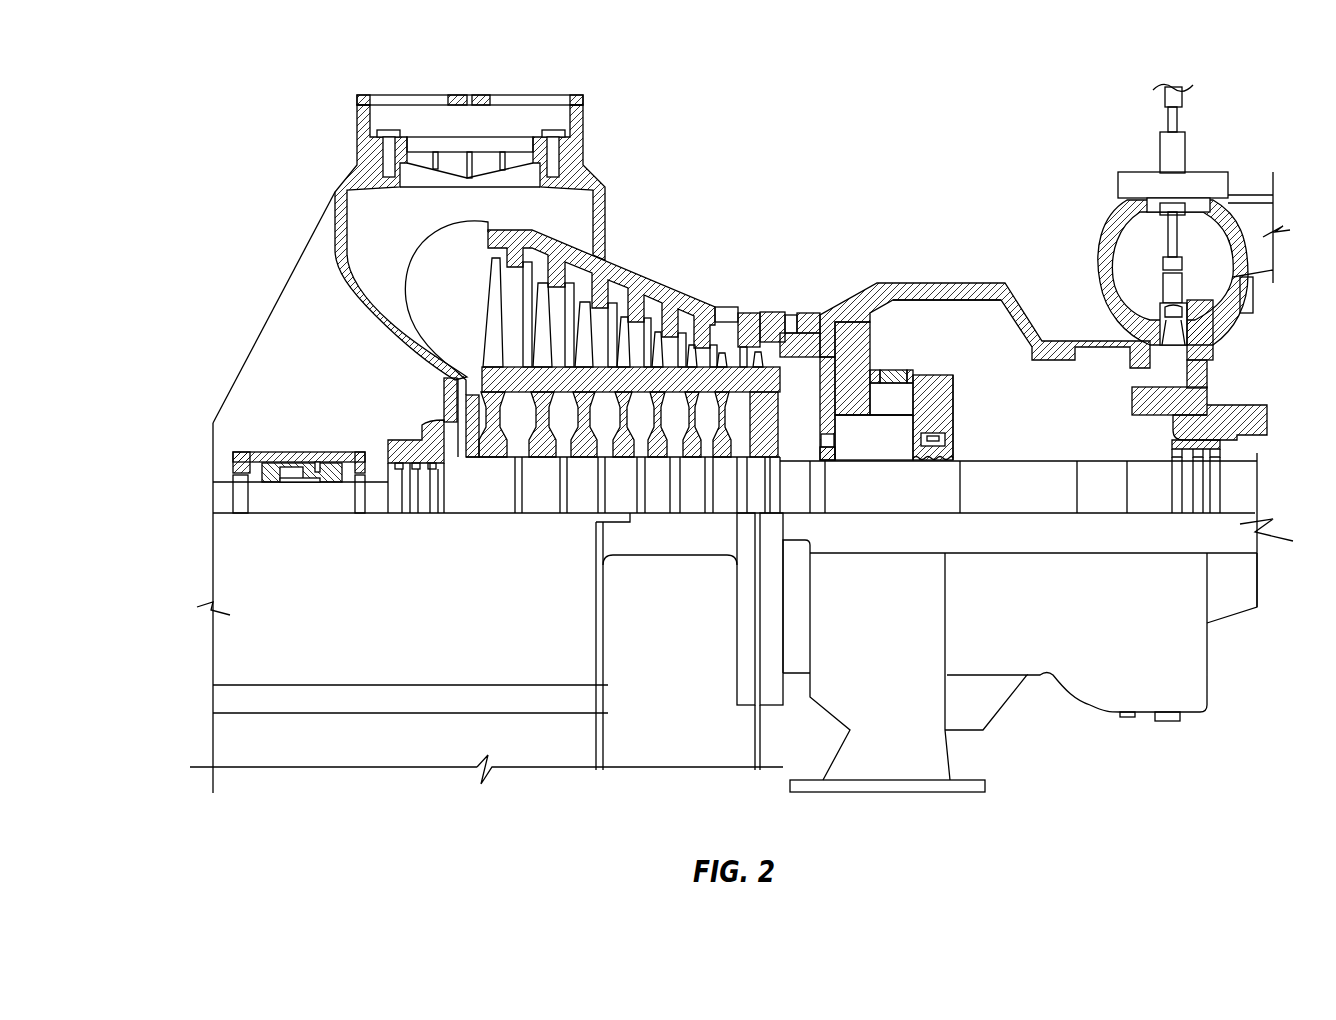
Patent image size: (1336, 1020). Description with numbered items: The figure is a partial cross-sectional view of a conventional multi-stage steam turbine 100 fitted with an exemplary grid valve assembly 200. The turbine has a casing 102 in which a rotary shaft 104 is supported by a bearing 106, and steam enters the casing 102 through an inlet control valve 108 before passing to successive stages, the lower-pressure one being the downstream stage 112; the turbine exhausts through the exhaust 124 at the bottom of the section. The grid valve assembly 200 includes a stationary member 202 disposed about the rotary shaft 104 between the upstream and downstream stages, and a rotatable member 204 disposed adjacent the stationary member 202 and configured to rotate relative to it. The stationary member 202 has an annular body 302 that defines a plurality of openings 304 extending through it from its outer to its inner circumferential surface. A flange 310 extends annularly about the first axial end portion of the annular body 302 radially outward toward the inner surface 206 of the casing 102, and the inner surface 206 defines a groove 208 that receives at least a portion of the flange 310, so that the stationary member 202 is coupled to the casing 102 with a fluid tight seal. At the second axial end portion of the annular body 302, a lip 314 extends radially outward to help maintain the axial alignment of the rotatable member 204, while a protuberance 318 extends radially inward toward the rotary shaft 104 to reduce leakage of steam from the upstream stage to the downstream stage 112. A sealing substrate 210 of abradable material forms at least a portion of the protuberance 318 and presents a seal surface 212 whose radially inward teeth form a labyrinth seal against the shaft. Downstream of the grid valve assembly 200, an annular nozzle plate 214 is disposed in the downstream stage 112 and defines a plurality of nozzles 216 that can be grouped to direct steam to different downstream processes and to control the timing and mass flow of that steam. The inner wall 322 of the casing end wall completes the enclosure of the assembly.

The multi-stage steam turbine 100 is at (814, 160).
The casing 102 is at (645, 282).
The rotary shaft 104 is at (1052, 503).
The bearing 106 is at (273, 467).
The inlet control valve 108 is at (1167, 288).
The downstream stage 112 is at (817, 455).
The exhaust 124 is at (925, 737).
The grid valve assembly 200 is at (958, 396).
The stationary member 202 is at (844, 314).
The rotatable member 204 is at (912, 373).
The inner surface 206 is at (1098, 347).
The groove 208 is at (863, 333).
The sealing substrate 210 is at (953, 457).
The seal surface 212 is at (935, 463).
The annular nozzle plate 214 is at (821, 375).
The nozzles 216 is at (835, 457).
The annular body 302 is at (872, 398).
The openings 304 is at (885, 405).
The flange 310 is at (893, 373).
The lip 314 is at (945, 385).
The protuberance 318 is at (953, 422).
The inner wall 322 is at (890, 330).